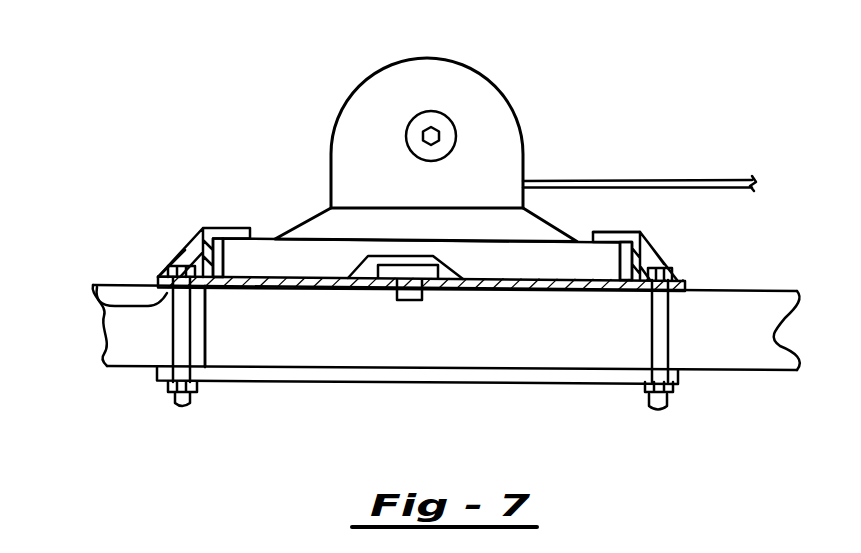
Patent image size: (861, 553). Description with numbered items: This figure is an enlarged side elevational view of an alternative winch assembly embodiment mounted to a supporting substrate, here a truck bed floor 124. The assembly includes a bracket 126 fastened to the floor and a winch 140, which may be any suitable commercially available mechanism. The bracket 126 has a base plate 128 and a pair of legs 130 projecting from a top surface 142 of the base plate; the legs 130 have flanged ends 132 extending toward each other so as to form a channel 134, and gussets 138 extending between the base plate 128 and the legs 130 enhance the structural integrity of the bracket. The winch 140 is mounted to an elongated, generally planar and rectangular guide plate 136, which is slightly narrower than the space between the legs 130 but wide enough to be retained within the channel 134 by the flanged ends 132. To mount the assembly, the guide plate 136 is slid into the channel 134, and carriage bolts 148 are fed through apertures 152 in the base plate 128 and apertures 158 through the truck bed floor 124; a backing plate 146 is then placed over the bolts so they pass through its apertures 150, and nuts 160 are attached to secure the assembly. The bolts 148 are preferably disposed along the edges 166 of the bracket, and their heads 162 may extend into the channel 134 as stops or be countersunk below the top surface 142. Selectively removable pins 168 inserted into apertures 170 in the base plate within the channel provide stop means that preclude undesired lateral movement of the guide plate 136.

The truck bed floor 124 is at (107, 364).
The bracket 126 is at (672, 232).
The base plate 128 is at (297, 291).
The legs 130 is at (203, 227).
The flanged ends 132 is at (615, 231).
The channel 134 is at (625, 286).
The guide plate 136 is at (237, 253).
The gussets 138 is at (187, 257).
The winch 140 is at (405, 82).
The top surface 142 is at (264, 277).
The backing plate 146 is at (383, 375).
The carriage bolts 148 is at (198, 398).
The apertures 150 is at (680, 380).
The apertures 152 is at (210, 291).
The apertures 158 is at (172, 332).
The nuts 160 is at (645, 390).
The heads 162 is at (170, 260).
The edges 166 is at (100, 310).
The removable pins 168 is at (418, 266).
The apertures 170 is at (392, 298).